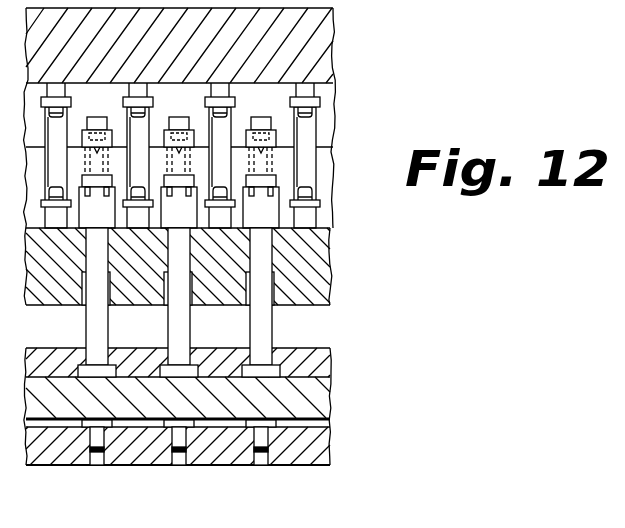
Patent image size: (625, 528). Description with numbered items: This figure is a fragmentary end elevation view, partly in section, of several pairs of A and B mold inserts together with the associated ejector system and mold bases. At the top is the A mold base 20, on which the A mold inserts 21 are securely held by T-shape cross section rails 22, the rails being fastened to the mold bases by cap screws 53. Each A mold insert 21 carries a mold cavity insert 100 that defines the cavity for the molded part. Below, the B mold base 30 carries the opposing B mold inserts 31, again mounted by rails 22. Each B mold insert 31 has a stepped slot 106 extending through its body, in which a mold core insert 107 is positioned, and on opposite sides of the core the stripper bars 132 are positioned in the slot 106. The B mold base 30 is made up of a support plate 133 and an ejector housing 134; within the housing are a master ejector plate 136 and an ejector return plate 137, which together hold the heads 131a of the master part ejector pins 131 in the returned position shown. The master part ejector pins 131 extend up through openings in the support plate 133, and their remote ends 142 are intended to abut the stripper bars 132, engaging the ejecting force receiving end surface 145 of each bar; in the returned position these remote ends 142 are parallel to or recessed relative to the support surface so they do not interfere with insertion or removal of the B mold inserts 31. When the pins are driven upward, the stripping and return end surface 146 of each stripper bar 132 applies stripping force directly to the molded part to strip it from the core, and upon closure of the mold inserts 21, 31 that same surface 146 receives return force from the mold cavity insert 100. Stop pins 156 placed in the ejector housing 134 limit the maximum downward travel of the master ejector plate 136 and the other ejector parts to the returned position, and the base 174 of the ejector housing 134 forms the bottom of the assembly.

The A mold base 20 is at (334, 30).
The A mold insert 21 is at (336, 83).
The rail 22 is at (138, 228).
The B mold base 30 is at (335, 270).
The B mold insert 31 is at (335, 150).
The cap screw 53 is at (230, 202).
The mold cavity insert 100 is at (261, 117).
The stepped slot 106 is at (257, 212).
The mold core insert 107 is at (316, 127).
The master part ejector pin 131 is at (272, 253).
The head of master part ejector pin 131a is at (263, 365).
The stripper bar 132 is at (320, 139).
The support plate 133 is at (330, 292).
The ejector housing 134 is at (331, 452).
The master ejector plate 136 is at (322, 390).
The ejector return plate 137 is at (322, 362).
The remote end of master part ejector pin 142 is at (300, 221).
The ejecting force receiving end surface 145 is at (314, 197).
The stripping and return end surface 146 is at (320, 110).
The stop pin 156 is at (259, 466).
The base of ejector housing 174 is at (293, 466).